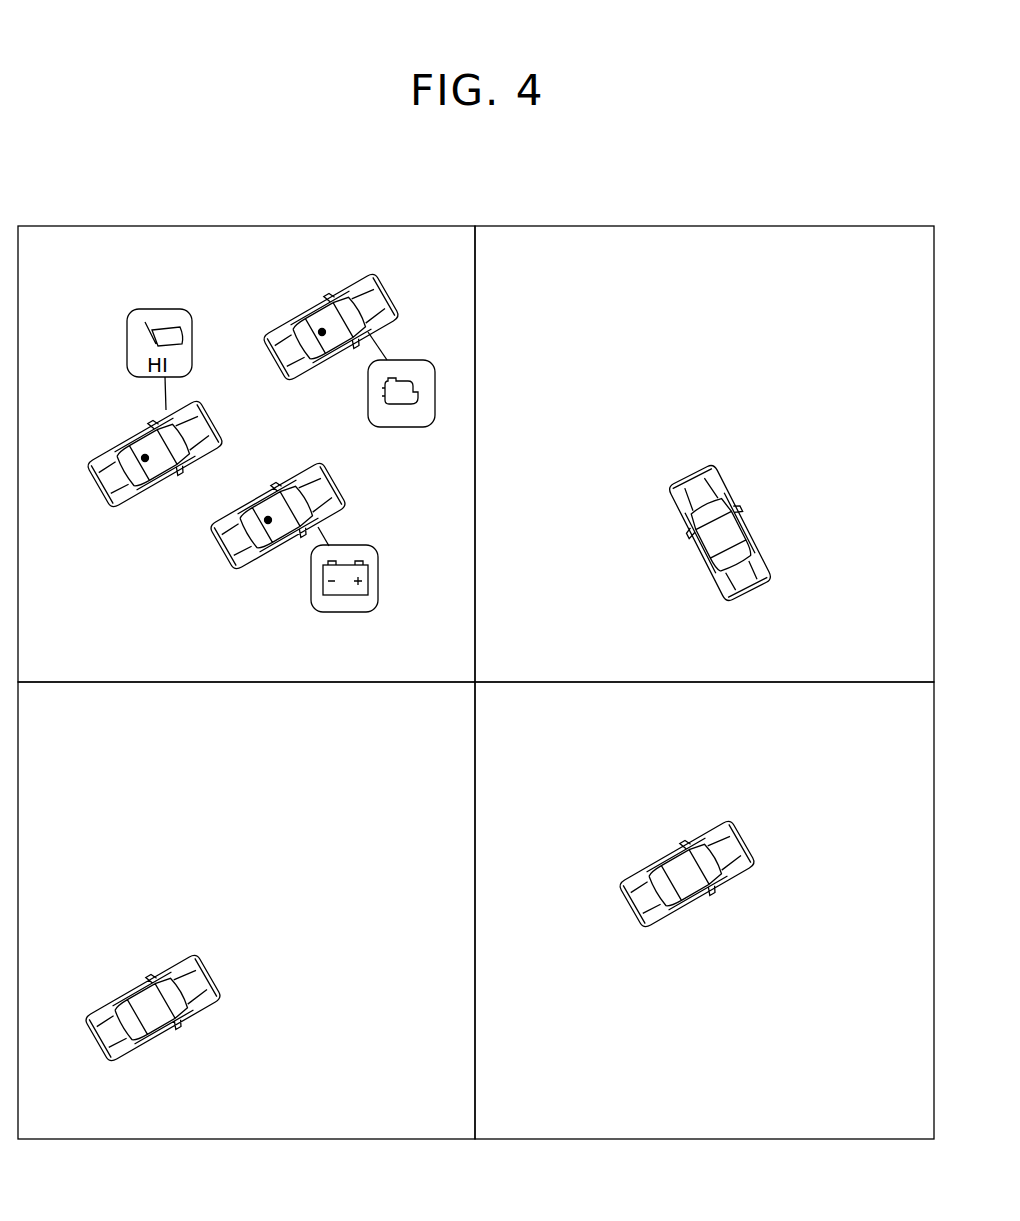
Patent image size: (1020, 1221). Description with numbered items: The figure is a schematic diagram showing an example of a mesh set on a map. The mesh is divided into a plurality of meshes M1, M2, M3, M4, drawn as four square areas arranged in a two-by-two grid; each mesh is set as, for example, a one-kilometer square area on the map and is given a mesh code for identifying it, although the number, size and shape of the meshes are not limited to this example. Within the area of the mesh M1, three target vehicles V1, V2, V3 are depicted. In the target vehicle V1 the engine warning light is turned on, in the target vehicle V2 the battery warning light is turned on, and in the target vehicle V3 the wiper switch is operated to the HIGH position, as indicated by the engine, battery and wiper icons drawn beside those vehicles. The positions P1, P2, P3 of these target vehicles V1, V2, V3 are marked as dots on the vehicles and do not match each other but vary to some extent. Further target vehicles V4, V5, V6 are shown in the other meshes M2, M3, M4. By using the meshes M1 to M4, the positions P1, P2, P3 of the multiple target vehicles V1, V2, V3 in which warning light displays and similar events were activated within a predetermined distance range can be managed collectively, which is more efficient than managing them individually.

The mesh M1 is at (234, 226).
The mesh M2 is at (693, 226).
The mesh M3 is at (172, 1139).
The mesh M4 is at (683, 1139).
The target vehicle V1 is at (328, 365).
The target vehicle V2 is at (274, 552).
The target vehicle V3 is at (150, 490).
The target vehicle V4 is at (759, 596).
The target vehicle V5 is at (176, 1032).
The target vehicle V6 is at (694, 907).
The position P1 is at (319, 330).
The position P2 is at (265, 518).
The position P3 is at (142, 456).